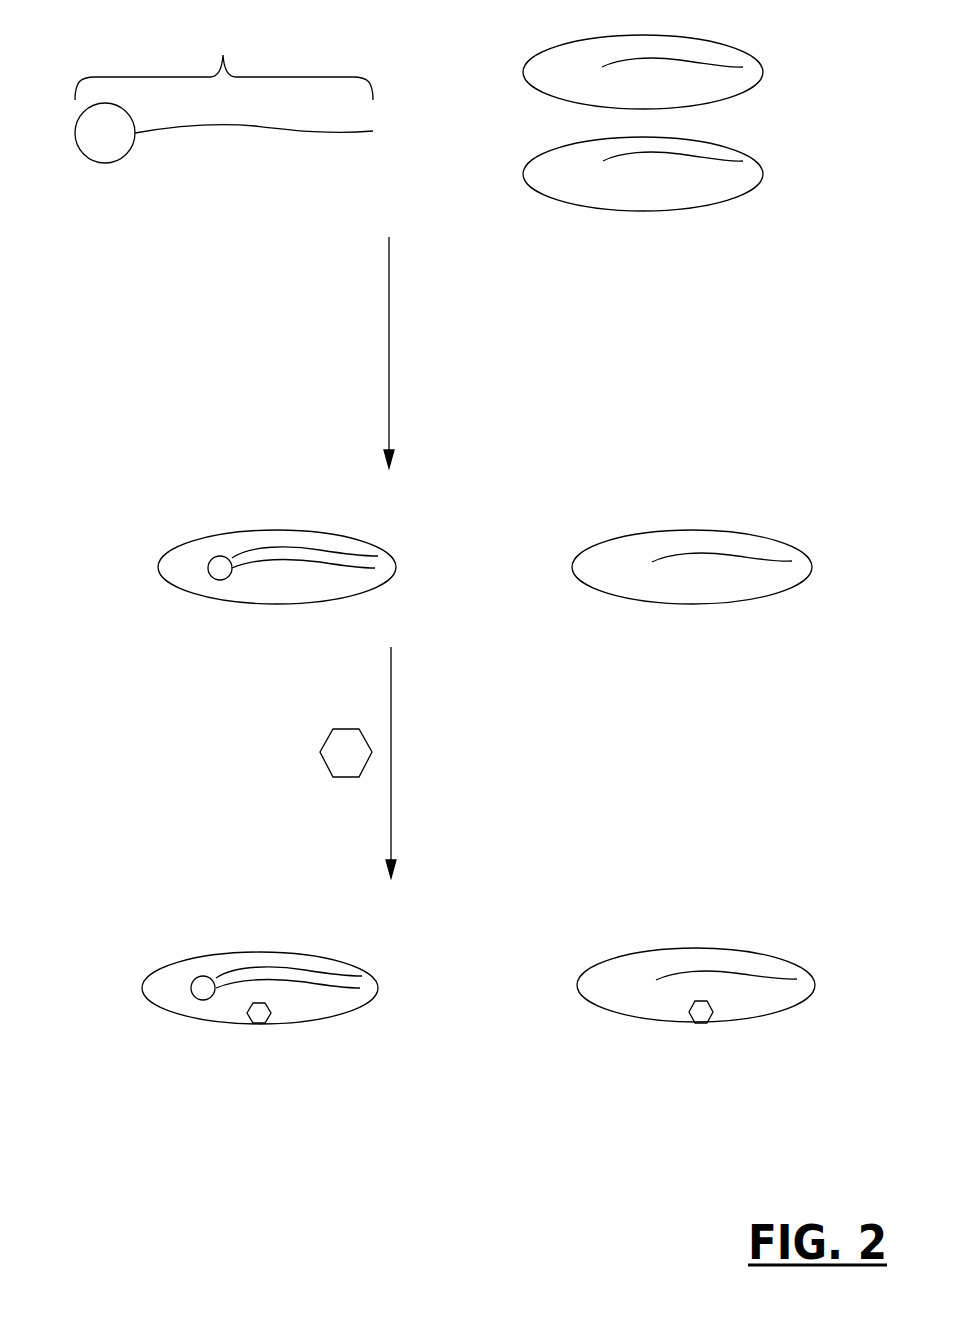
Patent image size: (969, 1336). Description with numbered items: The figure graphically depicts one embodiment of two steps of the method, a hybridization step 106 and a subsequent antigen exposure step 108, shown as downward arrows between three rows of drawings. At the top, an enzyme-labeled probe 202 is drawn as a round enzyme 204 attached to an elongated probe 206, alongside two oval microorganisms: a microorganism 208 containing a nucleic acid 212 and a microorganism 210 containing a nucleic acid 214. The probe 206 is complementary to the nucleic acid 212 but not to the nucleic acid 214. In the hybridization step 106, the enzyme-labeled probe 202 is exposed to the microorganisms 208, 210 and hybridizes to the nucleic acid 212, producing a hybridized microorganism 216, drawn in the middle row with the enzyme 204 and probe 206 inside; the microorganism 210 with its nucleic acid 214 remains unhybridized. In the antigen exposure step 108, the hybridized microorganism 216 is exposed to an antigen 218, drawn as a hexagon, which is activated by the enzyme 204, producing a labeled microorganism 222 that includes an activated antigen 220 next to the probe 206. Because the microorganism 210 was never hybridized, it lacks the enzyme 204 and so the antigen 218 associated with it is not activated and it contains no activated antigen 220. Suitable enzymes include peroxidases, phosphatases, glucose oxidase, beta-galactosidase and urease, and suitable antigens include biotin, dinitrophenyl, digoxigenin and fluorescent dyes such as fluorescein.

The hybridization step 106 is at (390, 350).
The antigen exposure step 108 is at (392, 758).
The enzyme-labeled probe 202 is at (224, 61).
The enzyme 204 is at (105, 163).
The probe 206 is at (255, 127).
The microorganism 208 is at (523, 180).
The microorganism 210 is at (523, 77).
The nucleic acid 212 is at (730, 160).
The nucleic acid 214 is at (730, 66).
The hybridized microorganism 216 is at (158, 570).
The antigen 218 is at (320, 752).
The activated antigen 220 is at (249, 1020).
The labeled microorganism 222 is at (142, 990).